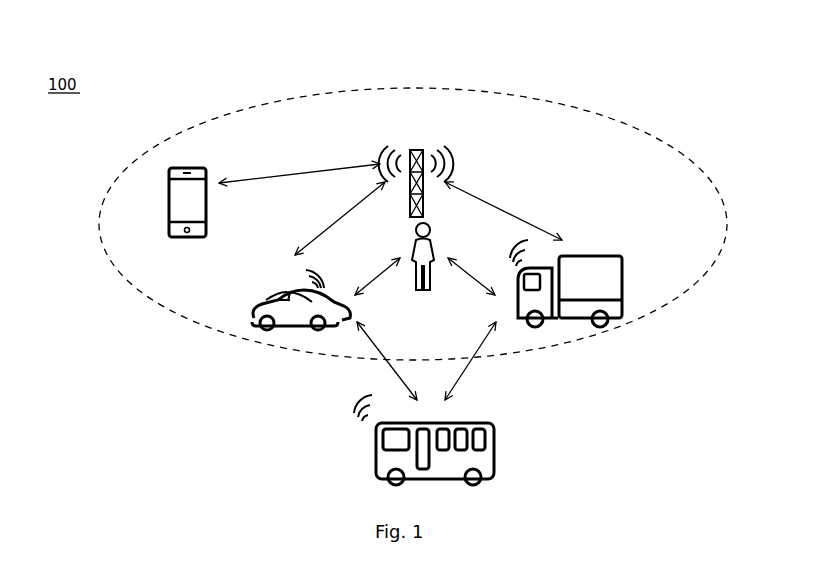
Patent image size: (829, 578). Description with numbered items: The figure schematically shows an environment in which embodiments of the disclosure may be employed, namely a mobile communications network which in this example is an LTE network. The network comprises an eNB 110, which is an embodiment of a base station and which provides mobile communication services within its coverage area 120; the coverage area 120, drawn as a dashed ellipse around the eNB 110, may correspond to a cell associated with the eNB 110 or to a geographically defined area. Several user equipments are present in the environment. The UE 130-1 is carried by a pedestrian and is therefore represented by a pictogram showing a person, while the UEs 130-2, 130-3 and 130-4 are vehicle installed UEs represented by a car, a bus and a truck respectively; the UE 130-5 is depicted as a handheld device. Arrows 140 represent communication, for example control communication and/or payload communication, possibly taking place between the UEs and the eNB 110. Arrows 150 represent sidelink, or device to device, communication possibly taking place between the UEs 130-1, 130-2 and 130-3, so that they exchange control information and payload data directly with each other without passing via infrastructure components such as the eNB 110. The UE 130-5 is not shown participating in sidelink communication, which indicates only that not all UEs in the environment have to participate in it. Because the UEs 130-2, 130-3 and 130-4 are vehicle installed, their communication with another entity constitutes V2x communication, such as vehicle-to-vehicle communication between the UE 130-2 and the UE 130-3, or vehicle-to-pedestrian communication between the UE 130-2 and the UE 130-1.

The eNB 110 is at (447, 162).
The coverage area 120 is at (660, 136).
The UE 130-1 is at (432, 238).
The UE 130-2 is at (264, 292).
The UE 130-3 is at (497, 436).
The UE 130-4 is at (600, 256).
The UE 130-5 is at (168, 171).
The arrows 140 is at (266, 180).
The arrows 150 is at (468, 370).